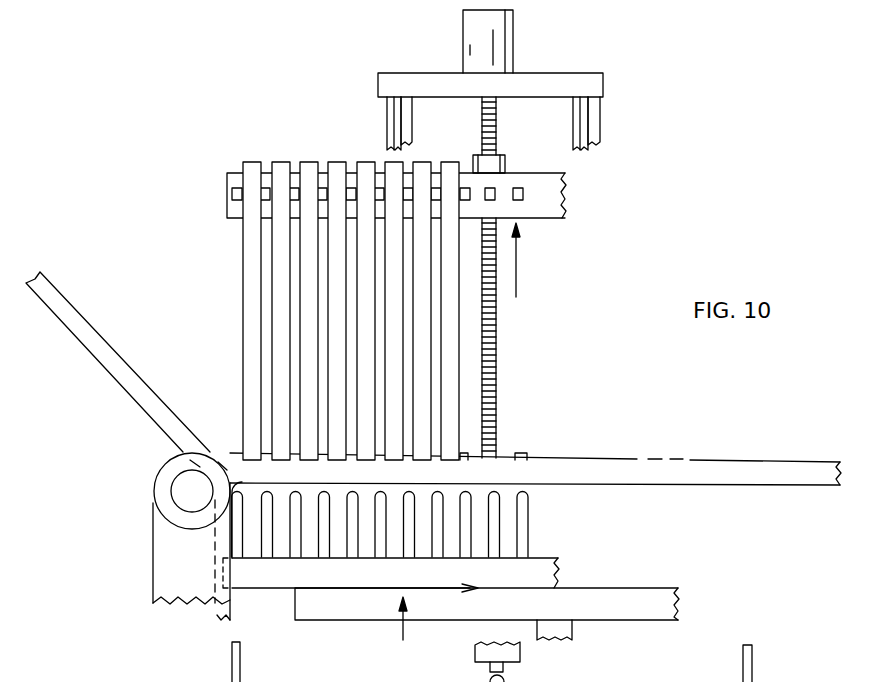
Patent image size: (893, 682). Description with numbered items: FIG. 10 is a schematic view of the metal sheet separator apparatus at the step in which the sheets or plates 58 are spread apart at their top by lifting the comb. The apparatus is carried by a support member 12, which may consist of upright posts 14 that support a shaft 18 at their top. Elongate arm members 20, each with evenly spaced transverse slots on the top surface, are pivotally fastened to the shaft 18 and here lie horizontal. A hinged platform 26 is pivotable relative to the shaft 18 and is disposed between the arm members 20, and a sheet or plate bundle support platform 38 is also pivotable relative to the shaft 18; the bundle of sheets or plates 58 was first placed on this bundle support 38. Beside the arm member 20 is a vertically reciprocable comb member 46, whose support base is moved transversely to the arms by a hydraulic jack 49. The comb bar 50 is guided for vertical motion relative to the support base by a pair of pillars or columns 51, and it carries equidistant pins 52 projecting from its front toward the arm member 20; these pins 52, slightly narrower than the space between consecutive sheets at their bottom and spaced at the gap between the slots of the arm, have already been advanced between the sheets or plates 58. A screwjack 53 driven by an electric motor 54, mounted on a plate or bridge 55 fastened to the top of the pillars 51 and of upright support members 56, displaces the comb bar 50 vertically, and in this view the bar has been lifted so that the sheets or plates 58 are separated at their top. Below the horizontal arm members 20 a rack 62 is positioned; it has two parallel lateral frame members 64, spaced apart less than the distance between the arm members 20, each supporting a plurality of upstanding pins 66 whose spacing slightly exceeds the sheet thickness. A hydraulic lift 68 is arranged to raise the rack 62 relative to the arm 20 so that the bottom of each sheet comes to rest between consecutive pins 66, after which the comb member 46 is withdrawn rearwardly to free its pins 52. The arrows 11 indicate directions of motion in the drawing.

The direction arrows 11 is at (92, 0).
The support member 12 is at (142, 616).
The upright posts 14 is at (183, 604).
The shaft 18 is at (183, 497).
The elongate arm members 20 is at (738, 498).
The hinged platform 26 is at (232, 610).
The sheet or plate bundle support platform 38 is at (118, 358).
The comb member 46 is at (552, 236).
The hydraulic jack 49 is at (522, 652).
The comb bar 50 is at (567, 205).
The pillars or columns 51 is at (396, 143).
The pins 52 is at (495, 192).
The screwjack 53 is at (497, 408).
The electric motor 54 is at (505, 45).
The plate or bridge 55 is at (603, 85).
The upright support members 56 is at (388, 117).
The sheets or plates 58 is at (300, 343).
The rack 62 is at (531, 598).
The lateral frame members 64 is at (480, 590).
The upstanding pins 66 is at (468, 520).
The hydraulic lift 68 is at (651, 582).